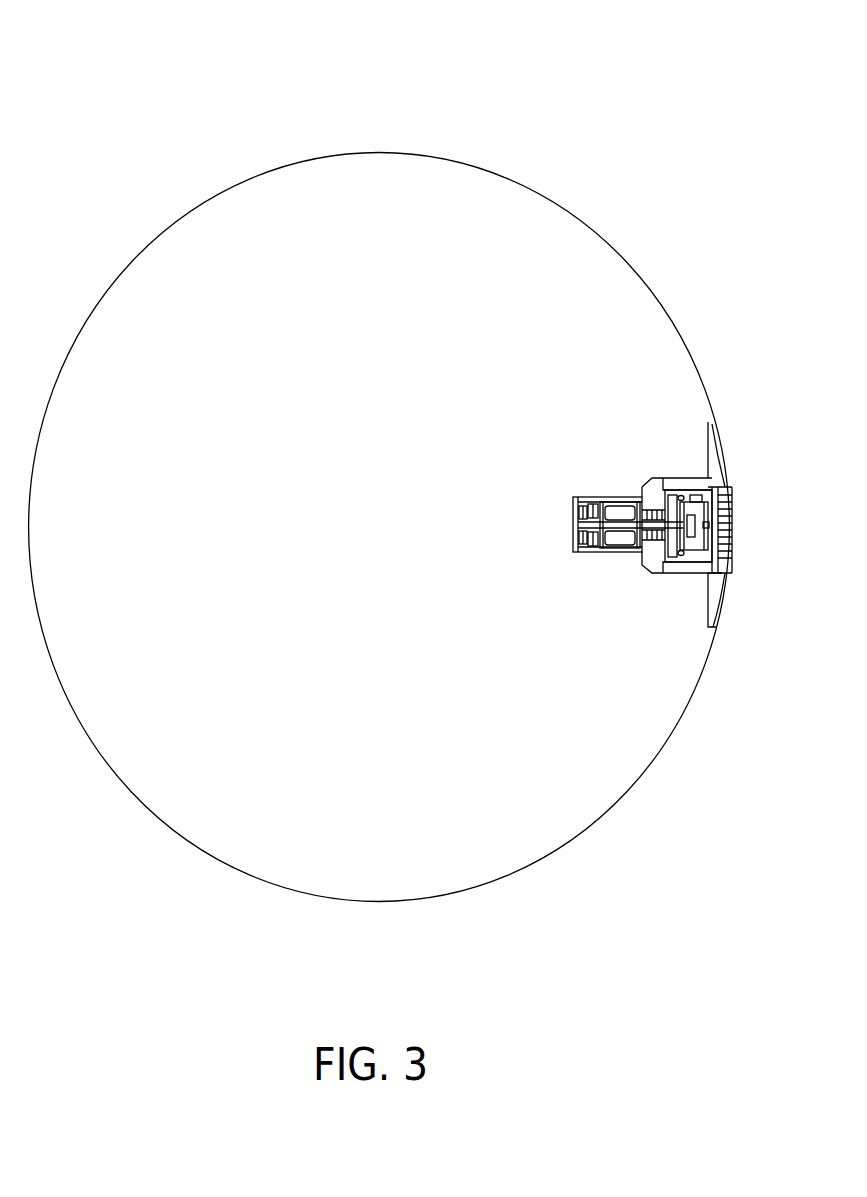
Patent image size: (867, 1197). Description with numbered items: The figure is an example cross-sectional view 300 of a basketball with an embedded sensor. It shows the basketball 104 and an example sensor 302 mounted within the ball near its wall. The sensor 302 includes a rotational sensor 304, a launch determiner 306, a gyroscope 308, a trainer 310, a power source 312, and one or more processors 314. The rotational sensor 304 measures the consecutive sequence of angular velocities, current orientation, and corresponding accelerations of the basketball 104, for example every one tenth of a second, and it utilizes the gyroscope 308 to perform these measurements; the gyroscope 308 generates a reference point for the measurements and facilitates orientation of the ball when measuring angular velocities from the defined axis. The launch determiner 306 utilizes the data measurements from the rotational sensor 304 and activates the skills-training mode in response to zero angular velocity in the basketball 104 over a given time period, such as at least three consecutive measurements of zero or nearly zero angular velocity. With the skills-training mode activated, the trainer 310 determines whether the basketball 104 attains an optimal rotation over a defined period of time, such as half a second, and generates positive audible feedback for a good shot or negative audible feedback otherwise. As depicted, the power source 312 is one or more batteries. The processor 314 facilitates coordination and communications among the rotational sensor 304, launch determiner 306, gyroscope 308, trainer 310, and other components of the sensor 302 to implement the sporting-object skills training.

The cross-sectional view 300 is at (360, 73).
The basketball 104 is at (157, 238).
The sensor 302 is at (625, 353).
The rotational sensor 304 is at (578, 508).
The launch determiner 306 is at (575, 545).
The gyroscope 308 is at (665, 513).
The trainer 310 is at (685, 497).
The power source 312 is at (625, 537).
The processor 314 is at (705, 537).